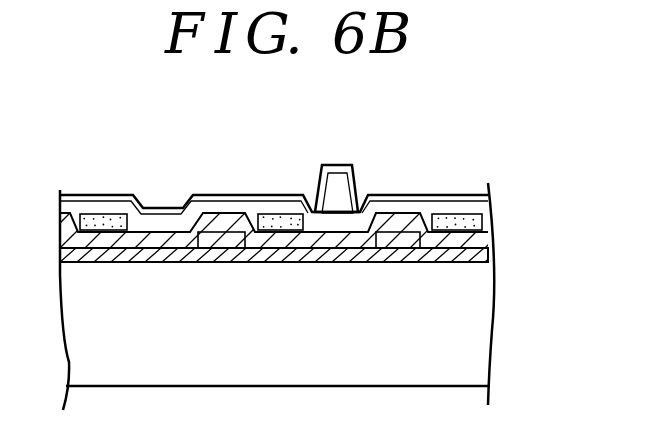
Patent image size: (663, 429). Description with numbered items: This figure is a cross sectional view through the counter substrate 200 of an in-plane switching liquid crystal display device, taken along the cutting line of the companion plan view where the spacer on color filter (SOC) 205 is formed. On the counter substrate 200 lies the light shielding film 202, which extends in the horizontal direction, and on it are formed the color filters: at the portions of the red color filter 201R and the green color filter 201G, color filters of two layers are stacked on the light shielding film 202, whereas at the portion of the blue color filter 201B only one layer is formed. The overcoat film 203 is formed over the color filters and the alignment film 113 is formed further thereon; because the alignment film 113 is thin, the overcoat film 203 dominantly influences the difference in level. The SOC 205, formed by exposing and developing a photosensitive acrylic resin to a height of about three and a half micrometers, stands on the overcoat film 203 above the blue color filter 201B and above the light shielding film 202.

The counter substrate 200 is at (473, 325).
The green color filter 201G is at (108, 217).
The blue color filter 201B is at (170, 240).
The red color filter 201R is at (230, 238).
The light shielding film 202 is at (472, 258).
The overcoat film 203 is at (473, 207).
The spacer on color filter (SOC) 205 is at (342, 187).
The alignment film 113 is at (460, 193).